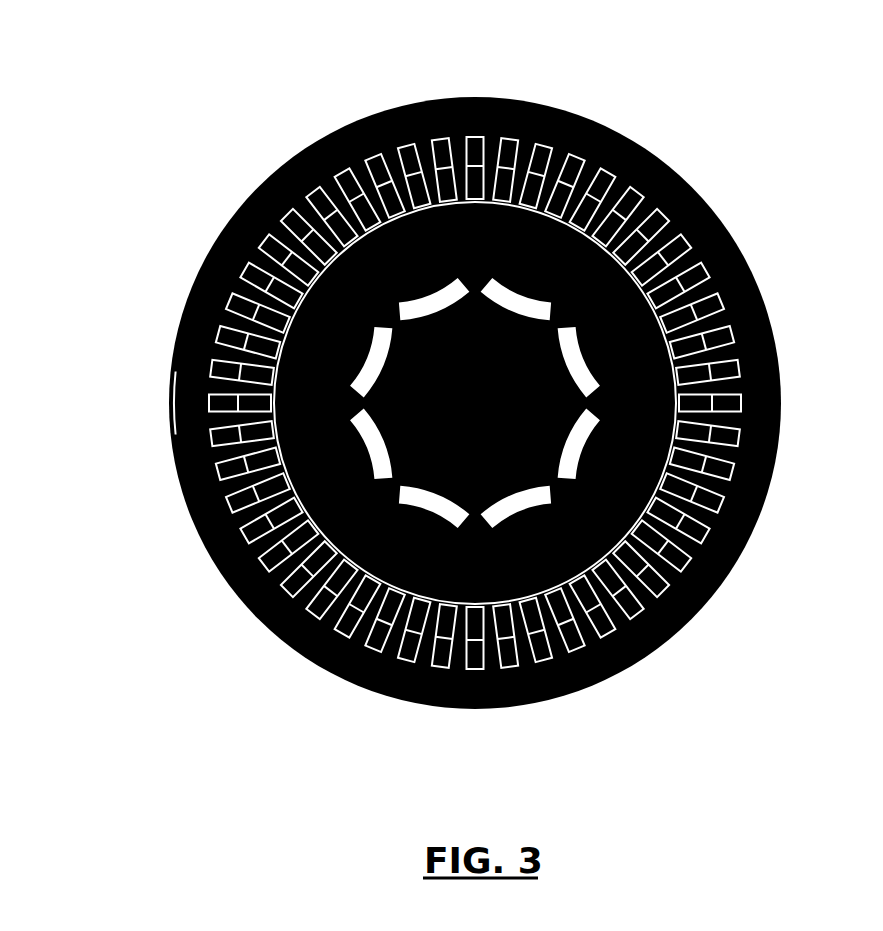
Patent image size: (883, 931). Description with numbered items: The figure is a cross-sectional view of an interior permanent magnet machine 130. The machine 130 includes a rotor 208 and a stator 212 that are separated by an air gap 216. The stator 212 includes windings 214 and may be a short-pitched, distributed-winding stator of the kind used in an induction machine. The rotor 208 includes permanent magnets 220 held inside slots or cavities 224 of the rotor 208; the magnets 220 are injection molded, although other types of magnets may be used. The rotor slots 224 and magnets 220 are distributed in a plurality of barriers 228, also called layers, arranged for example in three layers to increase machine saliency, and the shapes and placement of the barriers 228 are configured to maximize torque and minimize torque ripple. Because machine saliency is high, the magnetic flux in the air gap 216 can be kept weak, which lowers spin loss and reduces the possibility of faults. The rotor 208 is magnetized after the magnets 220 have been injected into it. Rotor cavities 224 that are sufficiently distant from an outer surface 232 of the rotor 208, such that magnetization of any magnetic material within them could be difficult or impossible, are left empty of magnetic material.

The machine 130 is at (485, 387).
The stator 212 is at (330, 133).
The air gap 216 is at (490, 203).
The outer surface 232 is at (590, 228).
The windings 214 is at (718, 310).
The rotor 208 is at (283, 310).
The permanent magnets 220 is at (677, 376).
The barriers 228 is at (622, 542).
The slots or cavities 224 is at (518, 606).